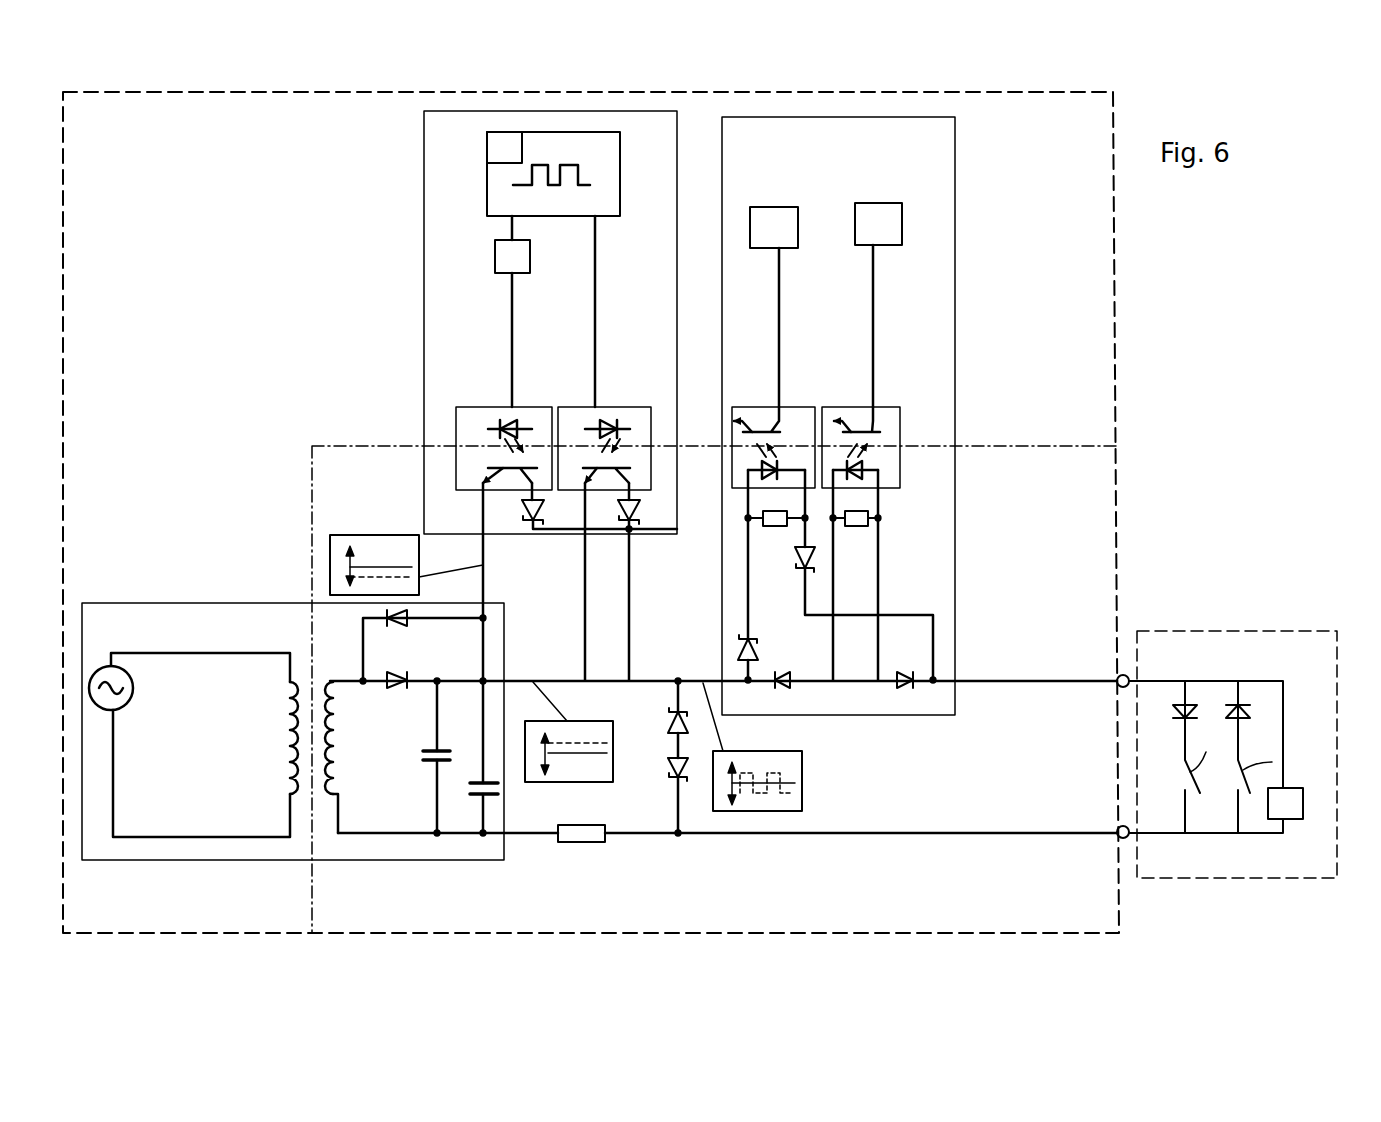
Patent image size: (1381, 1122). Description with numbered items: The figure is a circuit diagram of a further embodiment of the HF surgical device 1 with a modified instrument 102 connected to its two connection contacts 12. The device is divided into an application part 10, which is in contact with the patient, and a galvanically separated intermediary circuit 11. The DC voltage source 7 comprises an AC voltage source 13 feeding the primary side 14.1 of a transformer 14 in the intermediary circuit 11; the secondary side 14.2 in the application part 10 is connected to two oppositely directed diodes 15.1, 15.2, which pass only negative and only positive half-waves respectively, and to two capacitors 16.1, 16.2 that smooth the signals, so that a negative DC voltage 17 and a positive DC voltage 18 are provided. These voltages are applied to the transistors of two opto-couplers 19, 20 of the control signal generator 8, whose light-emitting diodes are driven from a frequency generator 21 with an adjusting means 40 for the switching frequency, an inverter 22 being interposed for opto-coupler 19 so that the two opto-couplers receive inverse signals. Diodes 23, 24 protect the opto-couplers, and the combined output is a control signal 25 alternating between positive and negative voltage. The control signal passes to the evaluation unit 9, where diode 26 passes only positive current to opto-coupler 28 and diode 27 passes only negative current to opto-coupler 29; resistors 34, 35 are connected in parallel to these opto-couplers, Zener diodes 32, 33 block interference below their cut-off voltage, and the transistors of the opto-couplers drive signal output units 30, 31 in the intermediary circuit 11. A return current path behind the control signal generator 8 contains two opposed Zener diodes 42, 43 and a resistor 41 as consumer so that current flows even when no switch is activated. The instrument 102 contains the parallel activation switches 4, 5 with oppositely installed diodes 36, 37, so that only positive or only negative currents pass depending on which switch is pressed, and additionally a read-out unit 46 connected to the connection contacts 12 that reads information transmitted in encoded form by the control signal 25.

The HF surgical device 1 is at (1115, 328).
The activation switch 4 is at (1202, 749).
The activation switch 5 is at (1280, 754).
The DC voltage source 7 is at (152, 602).
The control signal generator 8 is at (423, 253).
The evaluation unit 9 is at (955, 232).
The application part 10 is at (1083, 477).
The intermediary circuit 11 is at (1083, 413).
The connection contacts 12 is at (1130, 675).
The AC voltage source 13 is at (134, 688).
The transformer 14 is at (320, 798).
The primary side 14.1 is at (297, 758).
The secondary side 14.2 is at (325, 745).
The diode 15.1 is at (400, 623).
The diode 15.2 is at (408, 677).
The capacitor 16.1 is at (482, 800).
The capacitor 16.2 is at (435, 763).
The negative DC voltage 17 is at (353, 535).
The positive DC voltage 18 is at (572, 782).
The opto-coupler 19 is at (475, 405).
The opto-coupler 20 is at (622, 405).
The frequency generator 21 is at (620, 157).
The inverter 22 is at (530, 256).
The diode 23 is at (540, 512).
The diode 24 is at (642, 508).
The control signal 25 is at (802, 770).
The diode 26 is at (760, 645).
The diode 27 is at (785, 685).
The opto-coupler 28 is at (788, 405).
The opto-coupler 29 is at (885, 405).
The signal output unit 30 is at (782, 207).
The signal output unit 31 is at (885, 203).
The Zener diode 32 is at (815, 560).
The Zener diode 33 is at (905, 690).
The resistor 34 is at (772, 527).
The resistor 35 is at (868, 512).
The diode 36 is at (1180, 718).
The diode 37 is at (1240, 705).
The adjusting means 40 is at (517, 160).
The resistor 41 is at (585, 848).
The Zener diode 42 is at (668, 722).
The Zener diode 43 is at (672, 778).
The read-out unit 46 is at (1303, 800).
The modified instrument 102 is at (1253, 630).